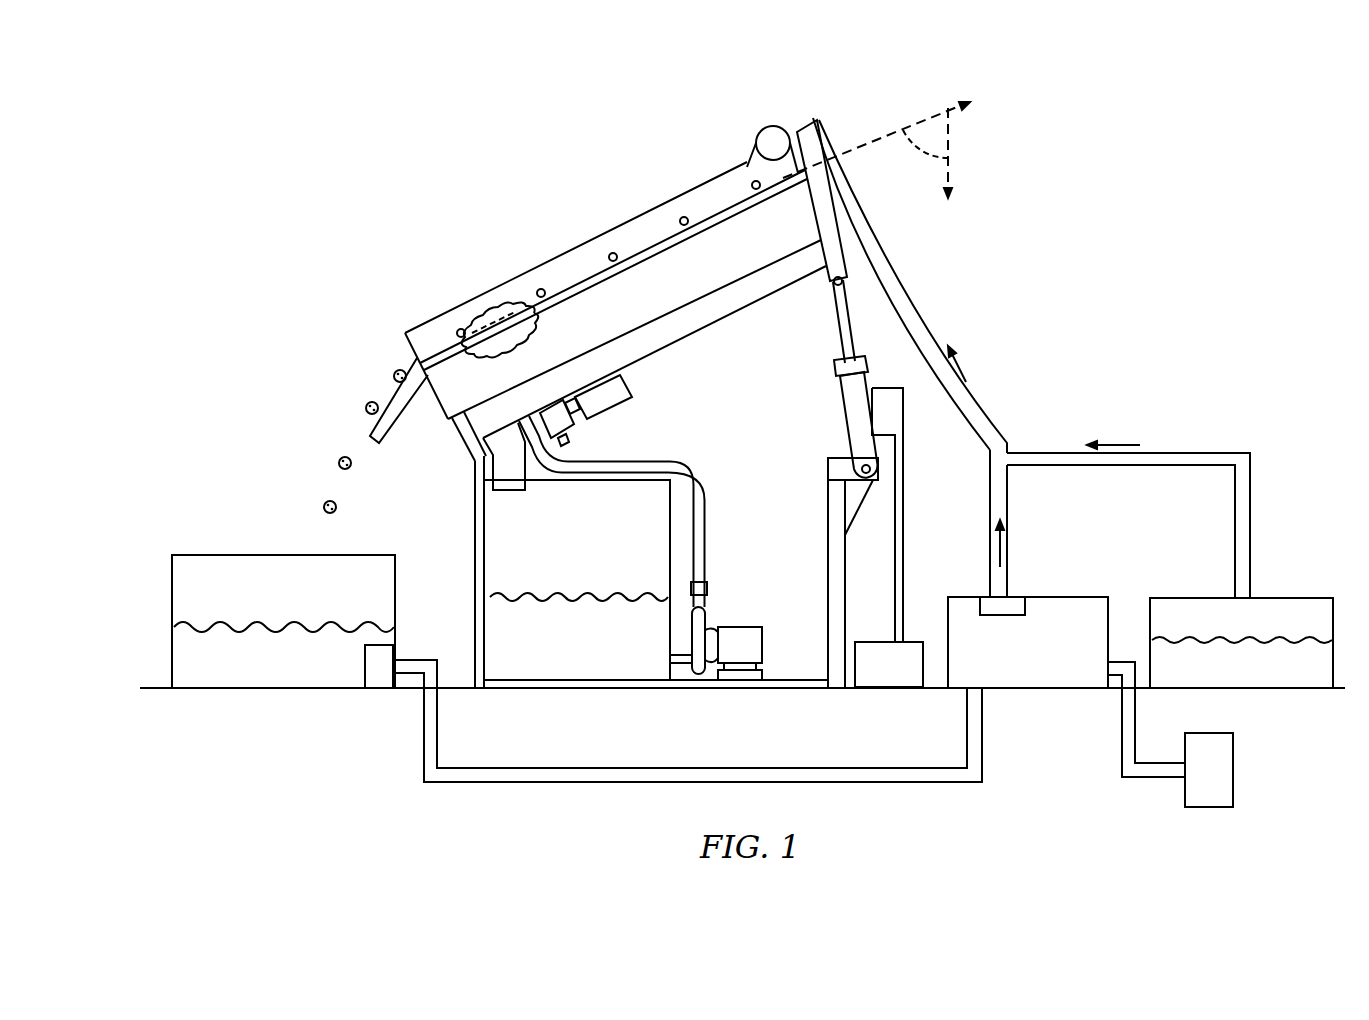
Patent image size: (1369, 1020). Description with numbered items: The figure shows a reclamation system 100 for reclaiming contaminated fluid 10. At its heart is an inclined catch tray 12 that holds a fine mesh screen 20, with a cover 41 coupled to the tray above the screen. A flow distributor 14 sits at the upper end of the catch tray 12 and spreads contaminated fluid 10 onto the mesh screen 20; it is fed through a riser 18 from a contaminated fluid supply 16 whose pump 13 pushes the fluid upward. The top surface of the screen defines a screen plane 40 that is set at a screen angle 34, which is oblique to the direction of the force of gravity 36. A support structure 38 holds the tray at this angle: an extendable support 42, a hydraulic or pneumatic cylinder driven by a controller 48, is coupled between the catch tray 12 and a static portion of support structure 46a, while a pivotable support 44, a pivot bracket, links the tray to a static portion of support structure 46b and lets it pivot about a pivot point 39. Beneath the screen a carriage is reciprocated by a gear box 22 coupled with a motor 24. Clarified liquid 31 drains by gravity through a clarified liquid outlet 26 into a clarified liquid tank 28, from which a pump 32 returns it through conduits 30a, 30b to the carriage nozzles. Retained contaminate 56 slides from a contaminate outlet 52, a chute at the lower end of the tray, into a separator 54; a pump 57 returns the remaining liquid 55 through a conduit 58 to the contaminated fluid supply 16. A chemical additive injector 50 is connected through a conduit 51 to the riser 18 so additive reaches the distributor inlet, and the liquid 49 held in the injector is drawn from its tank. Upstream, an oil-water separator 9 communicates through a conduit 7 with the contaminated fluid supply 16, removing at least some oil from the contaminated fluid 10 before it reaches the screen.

The reclamation system 100 is at (1120, 160).
The catch tray 12 is at (612, 213).
The cover 41 is at (553, 259).
The mesh screen 20 is at (492, 318).
The flow distributor 14 is at (768, 130).
The screen plane 40 is at (884, 138).
The direction of the force of gravity 36 is at (950, 123).
The screen angle 34 is at (932, 150).
The riser 18 is at (870, 226).
The extendable support 42 is at (852, 326).
The motor 24 is at (633, 390).
The gear box 22 is at (579, 430).
The contaminate outlet 52 is at (395, 392).
The contaminate 56 is at (325, 504).
The pivotable support 44 is at (482, 439).
The pivot point 39 is at (476, 465).
The static portion of support structure 46b is at (474, 540).
The static portion of support structure 46a is at (828, 478).
The controller 48 is at (880, 642).
The clarified liquid outlet 26 is at (526, 487).
The clarified liquid tank 28 is at (671, 543).
The clarified liquid 31 is at (540, 596).
The conduit 30b is at (705, 510).
The conduit 30a is at (692, 660).
The pump 32 is at (736, 626).
The support structure 38 is at (540, 689).
The contaminated fluid supply 16 is at (967, 597).
The pump 13 is at (1026, 606).
The contaminated fluid 10 is at (1004, 548).
The conduit 51 is at (1160, 453).
The chemical additive injector 50 is at (1268, 598).
The liquid level in second reservoir 49 is at (1276, 640).
The conduit 7 is at (1141, 780).
The oil-water separator 9 is at (1218, 733).
The separator 54 is at (194, 555).
The remaining liquid 55 is at (284, 626).
The pump 57 is at (364, 672).
The conduit 58 is at (423, 738).